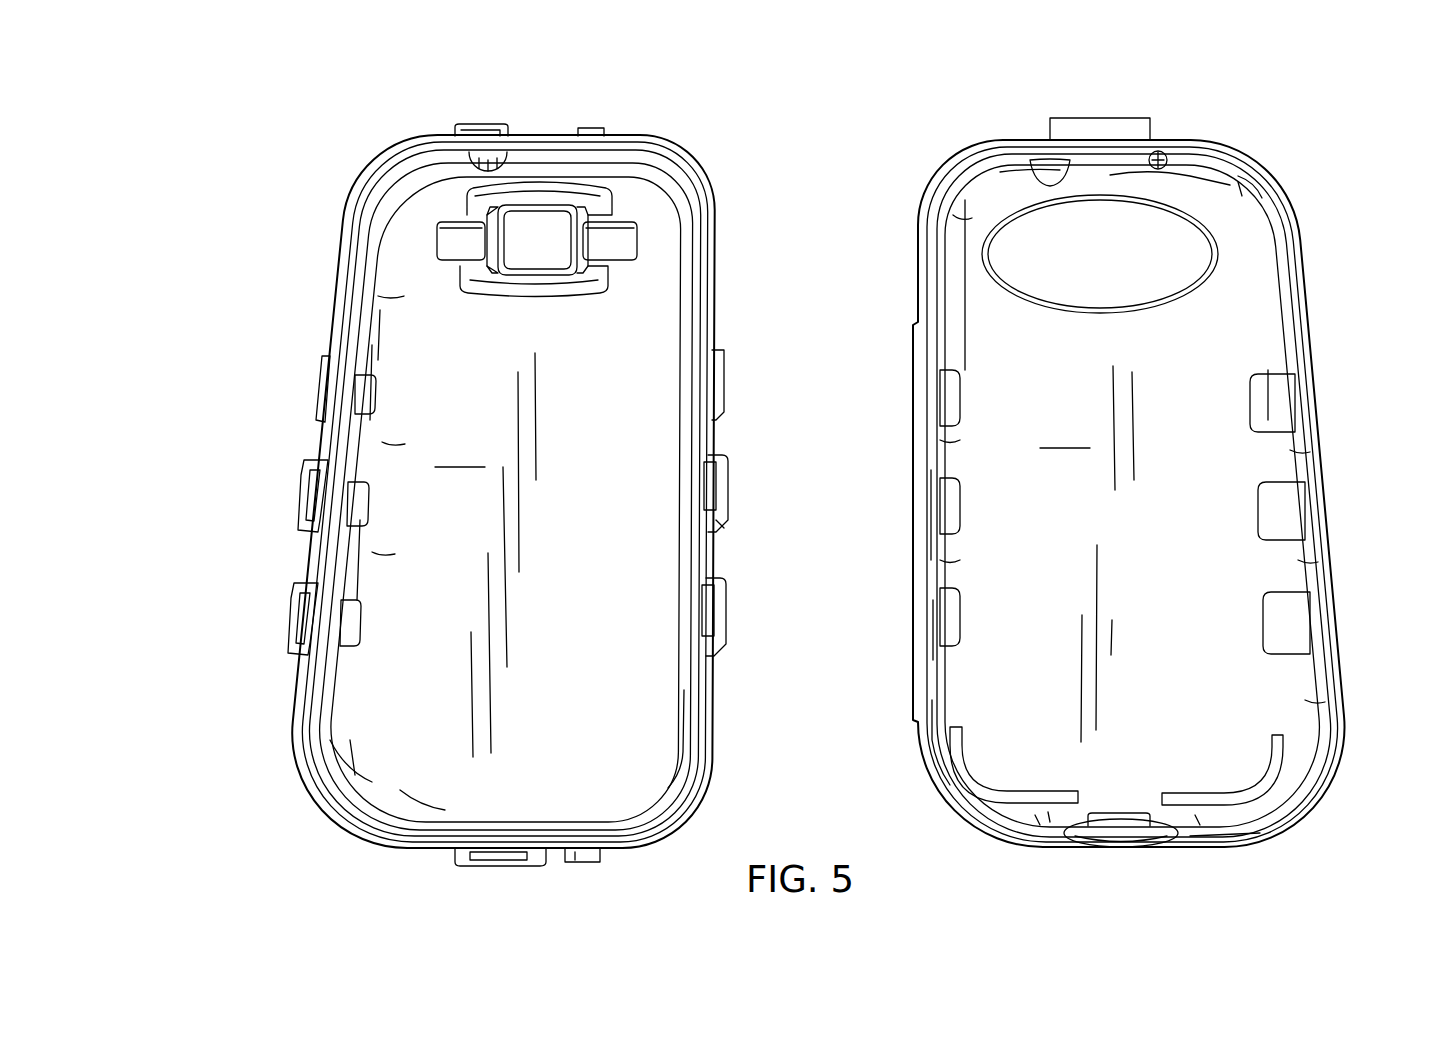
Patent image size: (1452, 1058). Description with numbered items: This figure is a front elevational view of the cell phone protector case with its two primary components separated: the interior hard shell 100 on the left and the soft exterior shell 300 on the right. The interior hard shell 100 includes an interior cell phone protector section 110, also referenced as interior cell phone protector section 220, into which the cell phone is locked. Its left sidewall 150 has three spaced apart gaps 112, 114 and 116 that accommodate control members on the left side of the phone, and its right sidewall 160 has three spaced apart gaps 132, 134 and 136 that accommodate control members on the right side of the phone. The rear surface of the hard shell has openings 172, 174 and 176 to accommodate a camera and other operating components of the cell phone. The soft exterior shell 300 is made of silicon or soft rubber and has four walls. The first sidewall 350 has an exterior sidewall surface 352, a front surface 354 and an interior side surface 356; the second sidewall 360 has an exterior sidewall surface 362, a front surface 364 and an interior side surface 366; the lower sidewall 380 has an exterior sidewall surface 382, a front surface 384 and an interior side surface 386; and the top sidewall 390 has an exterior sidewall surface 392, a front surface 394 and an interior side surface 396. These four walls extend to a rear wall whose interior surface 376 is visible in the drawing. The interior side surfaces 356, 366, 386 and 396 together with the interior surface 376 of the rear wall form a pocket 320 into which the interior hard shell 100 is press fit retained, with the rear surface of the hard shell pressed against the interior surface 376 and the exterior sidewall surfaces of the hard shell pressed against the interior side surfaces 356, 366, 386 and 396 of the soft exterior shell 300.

The interior hard shell 100 is at (248, 601).
The interior cell phone protector section 110 is at (675, 275).
The gap 112 is at (347, 300).
The gap 114 is at (322, 440).
The gap 116 is at (318, 557).
The gap 132 is at (704, 318).
The gap 134 is at (700, 437).
The gap 136 is at (683, 552).
The left sidewall 150 is at (319, 719).
The right sidewall 160 is at (684, 703).
The opening 172 is at (470, 237).
The opening 174 is at (533, 232).
The opening 176 is at (640, 237).
The interior cell phone protector section 220 is at (433, 553).
The soft exterior shell 300 is at (1348, 616).
The pocket 320 is at (993, 344).
The first sidewall 350 is at (936, 376).
The exterior sidewall surface 352 is at (925, 670).
The front surface 354 is at (930, 750).
The interior side surface 356 is at (952, 549).
The second sidewall 360 is at (1295, 308).
The exterior sidewall surface 362 is at (1315, 352).
The front surface 364 is at (1305, 552).
The interior side surface 366 is at (1305, 680).
The interior surface 376 is at (1154, 554).
The lower sidewall 380 is at (1010, 832).
The exterior sidewall surface 382 is at (1117, 848).
The front surface 384 is at (1232, 836).
The interior side surface 386 is at (1196, 825).
The top sidewall 390 is at (1044, 148).
The exterior sidewall surface 392 is at (1158, 152).
The front surface 394 is at (1225, 170).
The interior side surface 396 is at (1236, 186).